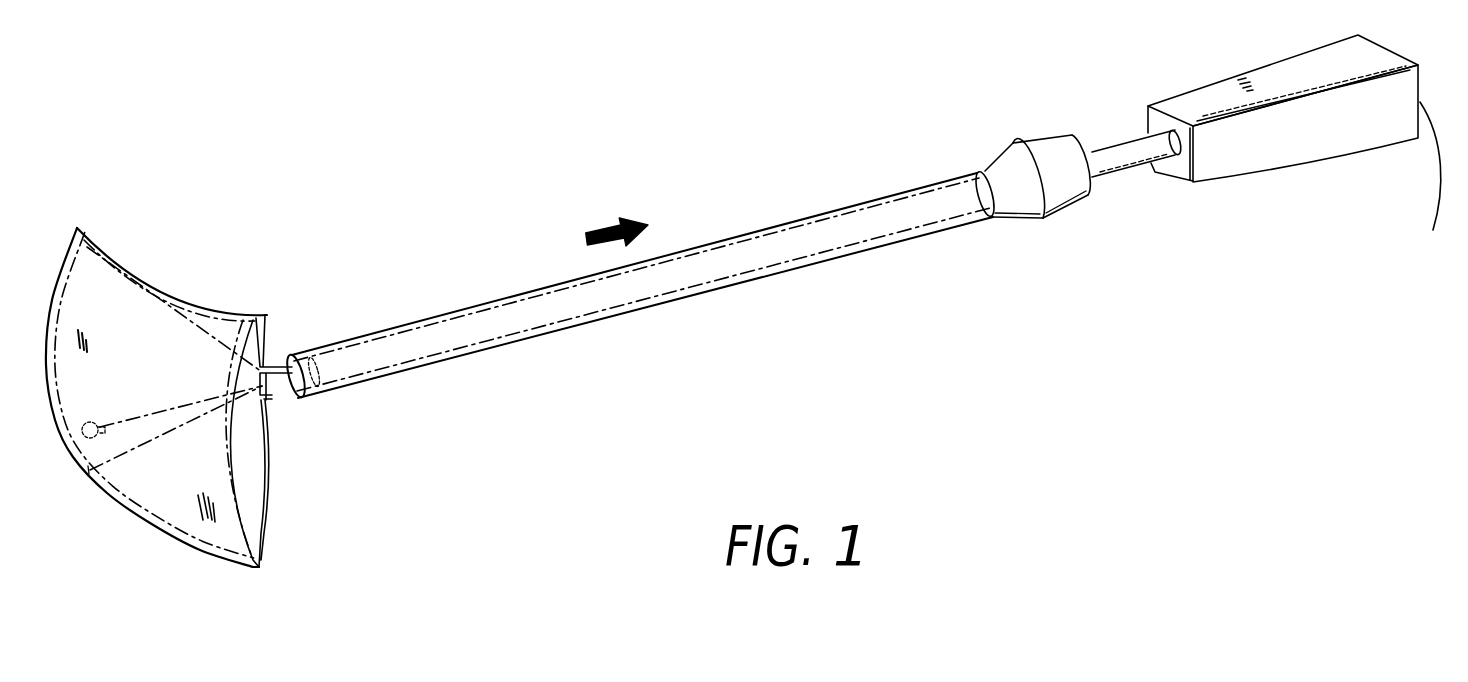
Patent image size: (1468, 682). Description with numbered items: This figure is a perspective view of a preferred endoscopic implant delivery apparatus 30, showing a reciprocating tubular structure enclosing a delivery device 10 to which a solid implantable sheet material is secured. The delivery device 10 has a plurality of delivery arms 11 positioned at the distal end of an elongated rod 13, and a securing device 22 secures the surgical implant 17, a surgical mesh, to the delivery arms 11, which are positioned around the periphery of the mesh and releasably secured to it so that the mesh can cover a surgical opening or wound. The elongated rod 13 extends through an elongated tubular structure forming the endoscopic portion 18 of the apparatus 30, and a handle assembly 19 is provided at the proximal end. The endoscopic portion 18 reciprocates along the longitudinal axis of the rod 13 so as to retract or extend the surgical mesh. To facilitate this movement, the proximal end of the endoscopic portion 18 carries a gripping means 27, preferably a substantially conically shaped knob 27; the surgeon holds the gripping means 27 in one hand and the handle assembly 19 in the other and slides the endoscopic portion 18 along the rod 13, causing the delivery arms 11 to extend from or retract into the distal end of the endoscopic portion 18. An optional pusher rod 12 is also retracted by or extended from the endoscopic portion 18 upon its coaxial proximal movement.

The delivery device 10 is at (209, 424).
The delivery arms 11 is at (270, 417).
The pusher rod 12 is at (147, 423).
The elongated rod 13 is at (1110, 150).
The surgical implant 17 is at (200, 533).
The endoscopic portion 18 is at (857, 253).
The handle assembly 19 is at (1277, 160).
The securing device 22 is at (270, 473).
The gripping means 27 is at (1035, 203).
The apparatus 30 is at (745, 156).